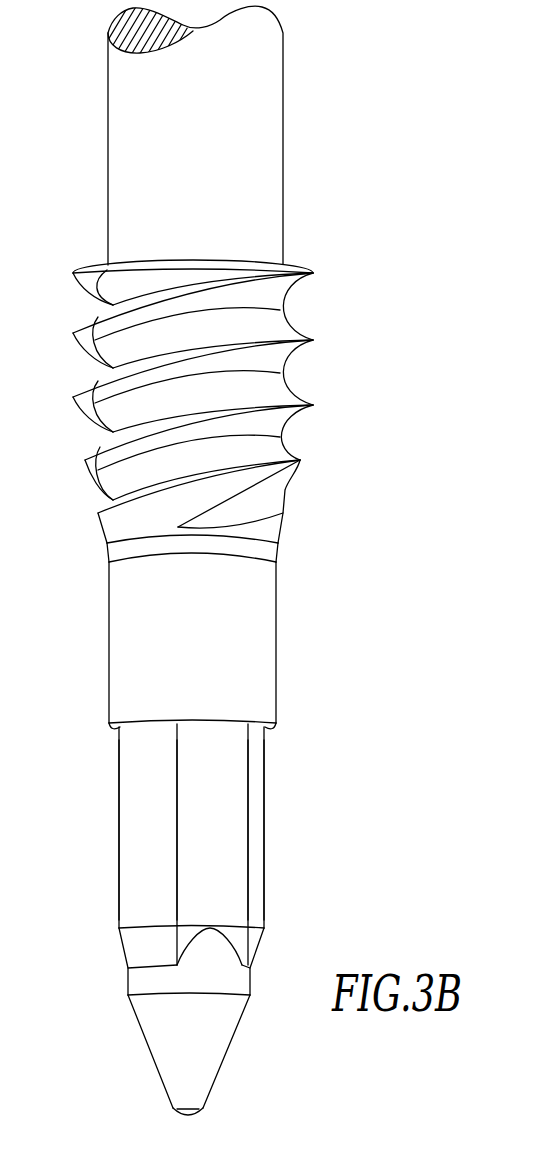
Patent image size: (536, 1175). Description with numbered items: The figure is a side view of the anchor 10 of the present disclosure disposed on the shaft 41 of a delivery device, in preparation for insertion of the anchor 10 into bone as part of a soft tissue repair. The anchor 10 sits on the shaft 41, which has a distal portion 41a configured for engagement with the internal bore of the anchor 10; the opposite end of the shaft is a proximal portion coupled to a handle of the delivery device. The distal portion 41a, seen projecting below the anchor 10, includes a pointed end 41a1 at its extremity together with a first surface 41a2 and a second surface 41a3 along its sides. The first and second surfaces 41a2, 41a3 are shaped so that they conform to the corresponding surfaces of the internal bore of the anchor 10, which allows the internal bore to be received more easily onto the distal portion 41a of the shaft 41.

The anchor 10 is at (270, 545).
The shaft 41 is at (260, 107).
The distal portion 41a is at (186, 919).
The pointed end 41a1 is at (233, 1043).
The first surface 41a2 is at (230, 888).
The second surface 41a3 is at (130, 816).